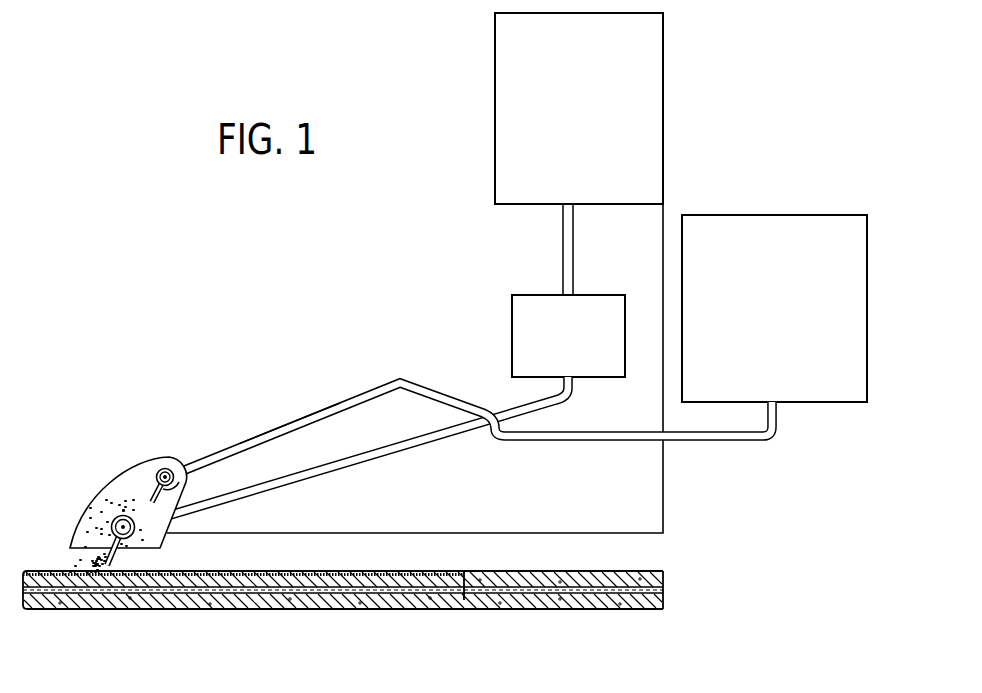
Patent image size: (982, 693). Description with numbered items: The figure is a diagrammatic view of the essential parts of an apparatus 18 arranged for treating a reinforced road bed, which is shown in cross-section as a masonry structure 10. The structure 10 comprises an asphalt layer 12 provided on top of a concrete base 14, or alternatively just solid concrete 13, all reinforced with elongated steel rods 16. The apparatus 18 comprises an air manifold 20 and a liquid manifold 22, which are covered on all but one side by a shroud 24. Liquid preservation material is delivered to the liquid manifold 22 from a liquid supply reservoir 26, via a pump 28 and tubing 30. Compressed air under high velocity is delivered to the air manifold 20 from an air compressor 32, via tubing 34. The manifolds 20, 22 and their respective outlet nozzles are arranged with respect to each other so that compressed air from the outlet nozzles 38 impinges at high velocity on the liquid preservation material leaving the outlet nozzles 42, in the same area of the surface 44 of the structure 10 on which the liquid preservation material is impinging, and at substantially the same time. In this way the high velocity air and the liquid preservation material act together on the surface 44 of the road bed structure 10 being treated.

The masonry structure 10 is at (343, 614).
The asphalt layer 12 is at (467, 571).
The solid concrete 13 is at (613, 571).
The concrete base 14 is at (437, 605).
The elongated steel rods 16 is at (312, 597).
The apparatus 18 is at (337, 395).
The air manifold 20 is at (170, 457).
The liquid manifold 22 is at (110, 490).
The shroud 24 is at (132, 470).
The liquid supply reservoir 26 is at (500, 94).
The pump 28 is at (514, 296).
The tubing 30 is at (400, 449).
The air compressor 32 is at (784, 215).
The tubing 34 is at (266, 432).
The outlet nozzles 38 is at (190, 487).
The outlet nozzles 42 is at (118, 550).
The surface 44 is at (348, 571).